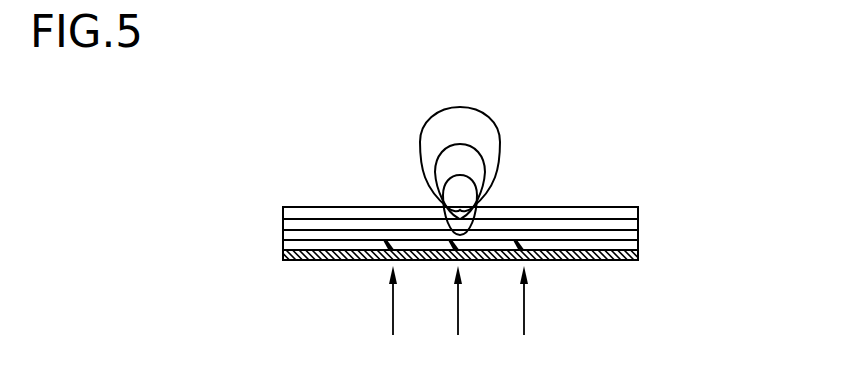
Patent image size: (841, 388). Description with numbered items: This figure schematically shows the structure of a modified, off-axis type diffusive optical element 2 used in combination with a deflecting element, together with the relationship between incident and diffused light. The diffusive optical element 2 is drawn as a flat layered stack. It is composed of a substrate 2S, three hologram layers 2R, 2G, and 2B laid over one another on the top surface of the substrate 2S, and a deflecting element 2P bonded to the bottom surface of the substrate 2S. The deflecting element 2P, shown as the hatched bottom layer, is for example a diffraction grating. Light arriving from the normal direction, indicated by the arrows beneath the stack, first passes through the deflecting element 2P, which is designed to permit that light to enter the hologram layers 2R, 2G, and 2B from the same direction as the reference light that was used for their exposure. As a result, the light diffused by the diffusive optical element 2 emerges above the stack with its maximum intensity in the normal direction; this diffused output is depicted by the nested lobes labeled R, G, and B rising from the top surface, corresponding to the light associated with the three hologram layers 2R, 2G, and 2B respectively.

The diffusive optical element 2 is at (649, 262).
The hologram layer 2R is at (283, 213).
The hologram layer 2G is at (283, 225).
The hologram layer 2B is at (283, 235).
The substrate 2S is at (284, 246).
The deflecting element 2P is at (292, 261).
The red light emission region R is at (493, 124).
The green light emission region G is at (483, 158).
The blue light emission region B is at (477, 190).